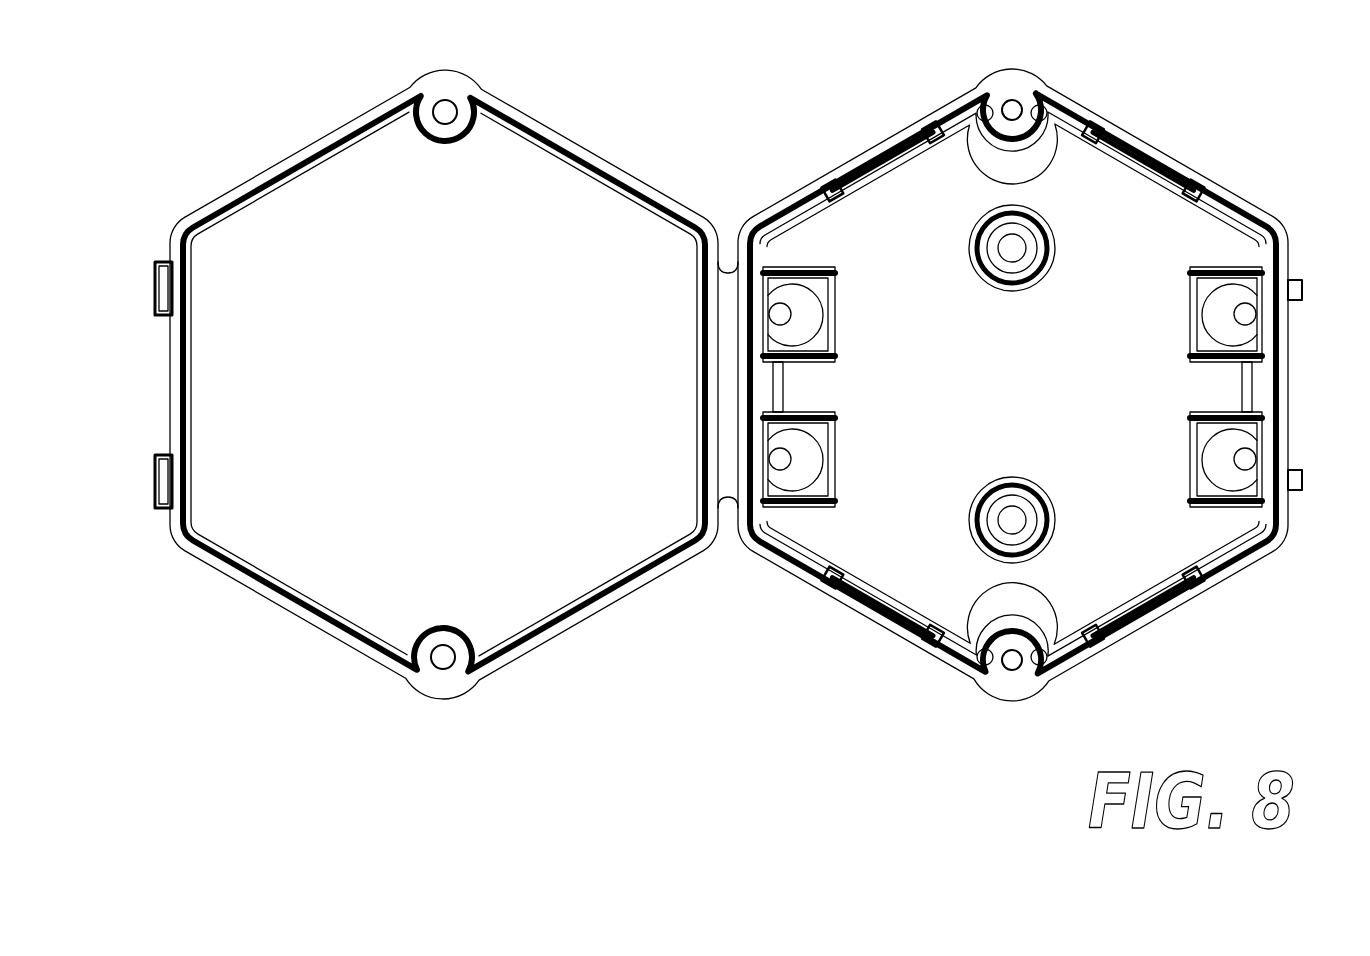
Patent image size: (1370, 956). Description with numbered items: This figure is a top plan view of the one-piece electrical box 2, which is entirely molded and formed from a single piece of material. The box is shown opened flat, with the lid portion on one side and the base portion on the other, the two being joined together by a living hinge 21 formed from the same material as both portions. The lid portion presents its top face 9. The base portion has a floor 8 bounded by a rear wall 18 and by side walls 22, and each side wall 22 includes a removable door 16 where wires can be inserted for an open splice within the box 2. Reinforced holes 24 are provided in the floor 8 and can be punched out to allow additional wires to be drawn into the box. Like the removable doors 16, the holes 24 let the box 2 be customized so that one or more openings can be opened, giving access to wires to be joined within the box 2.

The one-piece electrical box 2 is at (213, 103).
The top face 9 is at (536, 394).
The floor 8 is at (1050, 429).
The rear wall 18 is at (770, 392).
The removable door 16 is at (880, 608).
The side wall 22 is at (943, 653).
The reinforced hole 24 is at (1010, 247).
The living hinge 21 is at (725, 470).